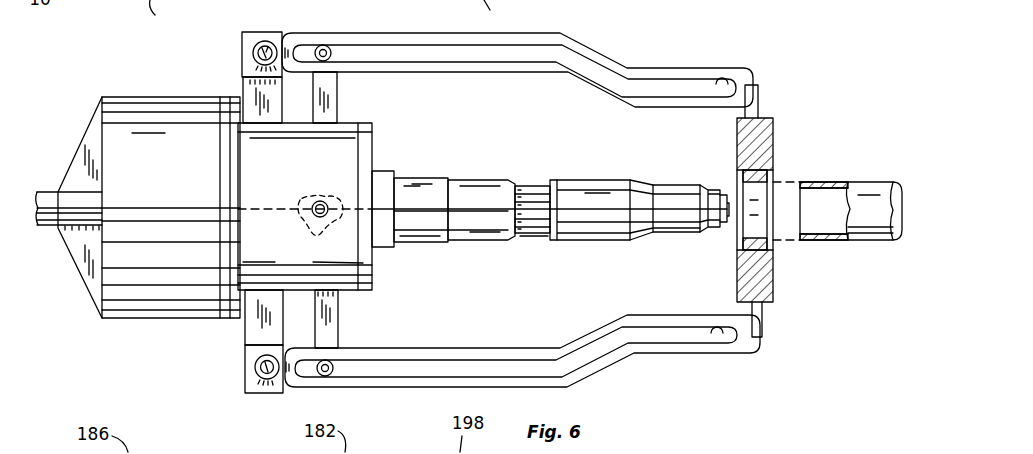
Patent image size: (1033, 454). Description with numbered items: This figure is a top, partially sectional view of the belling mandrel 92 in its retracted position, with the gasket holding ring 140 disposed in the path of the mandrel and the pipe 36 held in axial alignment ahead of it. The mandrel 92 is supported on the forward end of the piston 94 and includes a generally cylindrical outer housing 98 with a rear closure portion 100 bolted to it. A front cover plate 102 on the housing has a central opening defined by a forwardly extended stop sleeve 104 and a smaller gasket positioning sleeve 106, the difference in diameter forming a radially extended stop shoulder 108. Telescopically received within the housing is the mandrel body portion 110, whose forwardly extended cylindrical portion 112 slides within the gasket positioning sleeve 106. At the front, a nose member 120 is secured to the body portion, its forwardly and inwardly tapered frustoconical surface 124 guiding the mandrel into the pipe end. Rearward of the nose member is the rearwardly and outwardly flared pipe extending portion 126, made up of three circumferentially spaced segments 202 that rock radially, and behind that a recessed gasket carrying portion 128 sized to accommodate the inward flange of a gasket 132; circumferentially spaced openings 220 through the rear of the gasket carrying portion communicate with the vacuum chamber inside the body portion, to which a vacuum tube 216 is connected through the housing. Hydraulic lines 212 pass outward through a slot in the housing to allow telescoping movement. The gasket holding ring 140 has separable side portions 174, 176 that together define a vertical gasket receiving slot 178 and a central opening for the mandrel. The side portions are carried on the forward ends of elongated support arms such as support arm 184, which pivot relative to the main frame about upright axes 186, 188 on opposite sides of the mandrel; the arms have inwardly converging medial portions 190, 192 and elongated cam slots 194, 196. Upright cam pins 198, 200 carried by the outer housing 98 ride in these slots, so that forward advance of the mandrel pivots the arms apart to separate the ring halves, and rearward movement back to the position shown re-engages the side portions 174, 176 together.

The pipe 36 is at (878, 181).
The belling mandrel 92 is at (135, 322).
The piston 94 is at (60, 190).
The outer housing 98 is at (352, 130).
The rear closure portion 100 is at (165, 112).
The front cover plate 102 is at (378, 132).
The stop sleeve 104 is at (382, 176).
The gasket positioning sleeve 106 is at (416, 237).
The stop shoulder 108 is at (398, 180).
The mandrel body portion 110 is at (491, 178).
The cylindrical portion 112 is at (488, 237).
The nose member 120 is at (690, 233).
The frustoconical surface 124 is at (712, 228).
The pipe extending portion 126 is at (645, 190).
The gasket carrying portion 128 is at (541, 238).
The gasket 132 is at (770, 165).
The gasket holding ring 140 is at (789, 129).
The side portion 174 is at (760, 128).
The side portion 176 is at (776, 285).
The gasket receiving slot 178 is at (745, 250).
The support arm 184 is at (448, 384).
The upright axis 186 is at (253, 50).
The upright axis 188 is at (252, 372).
The inwardly converging medial portion 190 is at (607, 50).
The inwardly converging medial portion 192 is at (612, 352).
The cam slot 194 is at (722, 80).
The cam slot 196 is at (720, 338).
The cam pin 198 is at (331, 48).
The cam pin 200 is at (324, 377).
The segment 202 is at (603, 183).
The hydraulic lines 212 is at (303, 260).
The vacuum tube 216 is at (318, 199).
The openings 220 is at (518, 212).